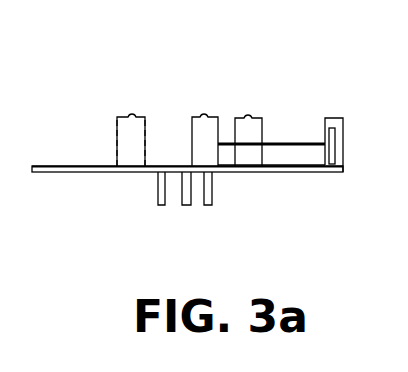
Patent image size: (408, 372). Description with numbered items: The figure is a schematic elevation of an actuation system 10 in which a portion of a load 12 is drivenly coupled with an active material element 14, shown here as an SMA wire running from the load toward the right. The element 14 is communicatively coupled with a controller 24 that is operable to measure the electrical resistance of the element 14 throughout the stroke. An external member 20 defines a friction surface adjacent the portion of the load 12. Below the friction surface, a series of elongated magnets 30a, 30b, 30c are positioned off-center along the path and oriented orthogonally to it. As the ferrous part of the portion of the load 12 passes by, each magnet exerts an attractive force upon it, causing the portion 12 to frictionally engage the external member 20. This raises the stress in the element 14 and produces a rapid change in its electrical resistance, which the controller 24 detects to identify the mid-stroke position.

The actuation system 10 is at (124, 62).
The portion of the load 12 is at (204, 116).
The active material element 14 is at (280, 143).
The external member 20 is at (333, 172).
The controller 24 is at (333, 153).
The elongated magnet 30a is at (157, 205).
The elongated magnet 30b is at (186, 206).
The elongated magnet 30c is at (213, 205).